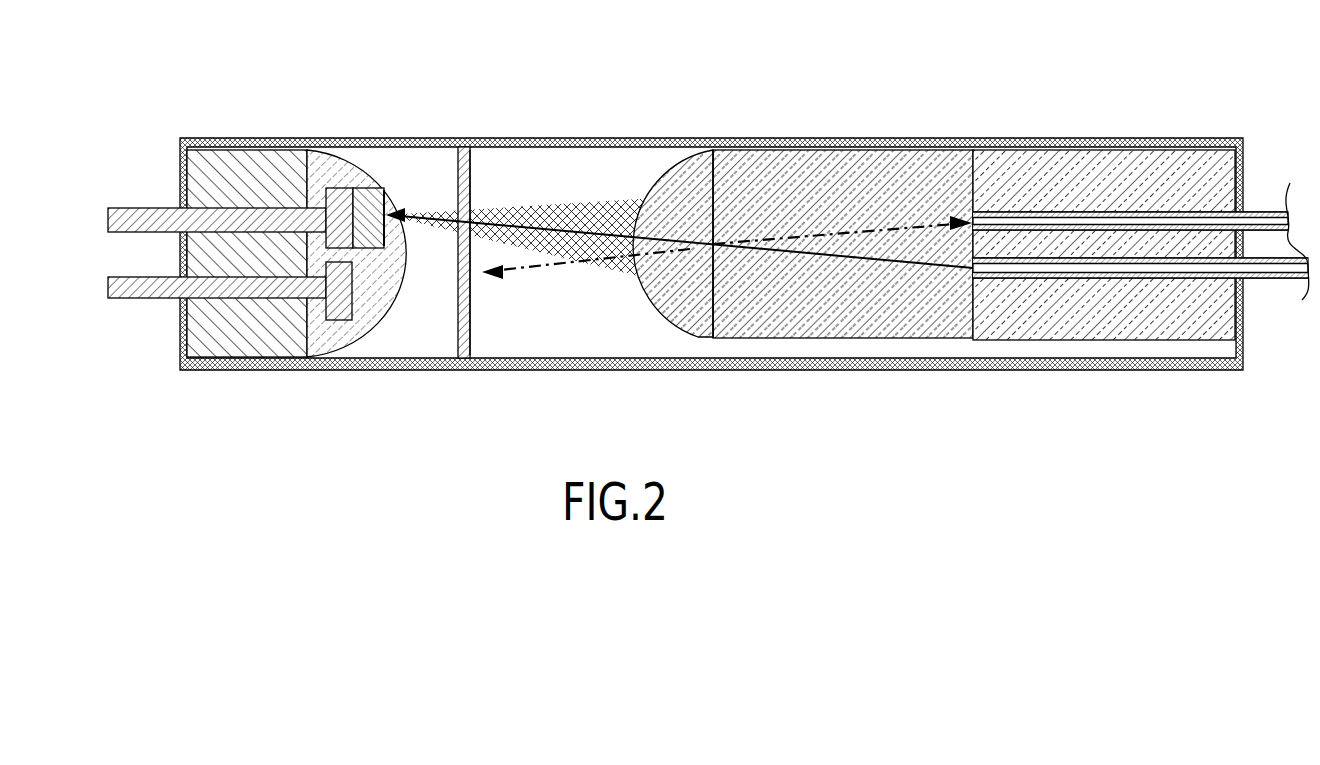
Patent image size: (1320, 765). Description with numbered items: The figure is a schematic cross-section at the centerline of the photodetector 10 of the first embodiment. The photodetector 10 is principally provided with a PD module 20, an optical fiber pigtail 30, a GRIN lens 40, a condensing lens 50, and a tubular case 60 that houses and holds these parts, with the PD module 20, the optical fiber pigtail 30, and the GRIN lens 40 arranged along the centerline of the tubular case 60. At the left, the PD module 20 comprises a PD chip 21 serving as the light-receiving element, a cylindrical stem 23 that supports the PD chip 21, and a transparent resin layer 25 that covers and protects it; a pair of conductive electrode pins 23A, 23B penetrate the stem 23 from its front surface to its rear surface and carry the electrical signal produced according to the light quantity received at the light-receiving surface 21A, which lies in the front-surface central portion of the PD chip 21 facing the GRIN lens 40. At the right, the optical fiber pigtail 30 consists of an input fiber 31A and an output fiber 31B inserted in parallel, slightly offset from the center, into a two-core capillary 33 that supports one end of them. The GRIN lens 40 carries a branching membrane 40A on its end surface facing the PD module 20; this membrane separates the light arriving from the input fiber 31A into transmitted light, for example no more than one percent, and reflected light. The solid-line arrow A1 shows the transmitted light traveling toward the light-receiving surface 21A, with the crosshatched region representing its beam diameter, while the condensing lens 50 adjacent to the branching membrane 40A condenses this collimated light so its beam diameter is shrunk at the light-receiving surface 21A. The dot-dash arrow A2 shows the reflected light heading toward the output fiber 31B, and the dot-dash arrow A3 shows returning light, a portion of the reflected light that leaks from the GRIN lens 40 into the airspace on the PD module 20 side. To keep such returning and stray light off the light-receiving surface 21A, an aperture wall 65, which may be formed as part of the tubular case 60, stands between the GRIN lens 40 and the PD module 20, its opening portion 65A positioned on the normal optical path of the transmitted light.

The photodetector 10 is at (757, 136).
The PD module 20 is at (265, 277).
The PD chip 21 is at (350, 188).
The light-receiving surface 21A is at (392, 200).
The stem 23 is at (247, 355).
The electrode pin 23A is at (165, 207).
The electrode pin 23B is at (165, 300).
The transparent resin layer 25 is at (350, 345).
The optical fiber pigtail 30 is at (1141, 311).
The input fiber 31A is at (1088, 340).
The output fiber 31B is at (1008, 428).
The two-core capillary 33 is at (1020, 340).
The GRIN lens 40 is at (833, 320).
The branching membrane 40A is at (713, 310).
The condensing lens 50 is at (688, 325).
The tubular case 60 is at (598, 362).
The aperture wall 65 is at (488, 348).
The opening portion 65A is at (470, 195).
The arrow A1 is at (573, 207).
The arrow A2 is at (865, 205).
The arrow A3 is at (562, 262).